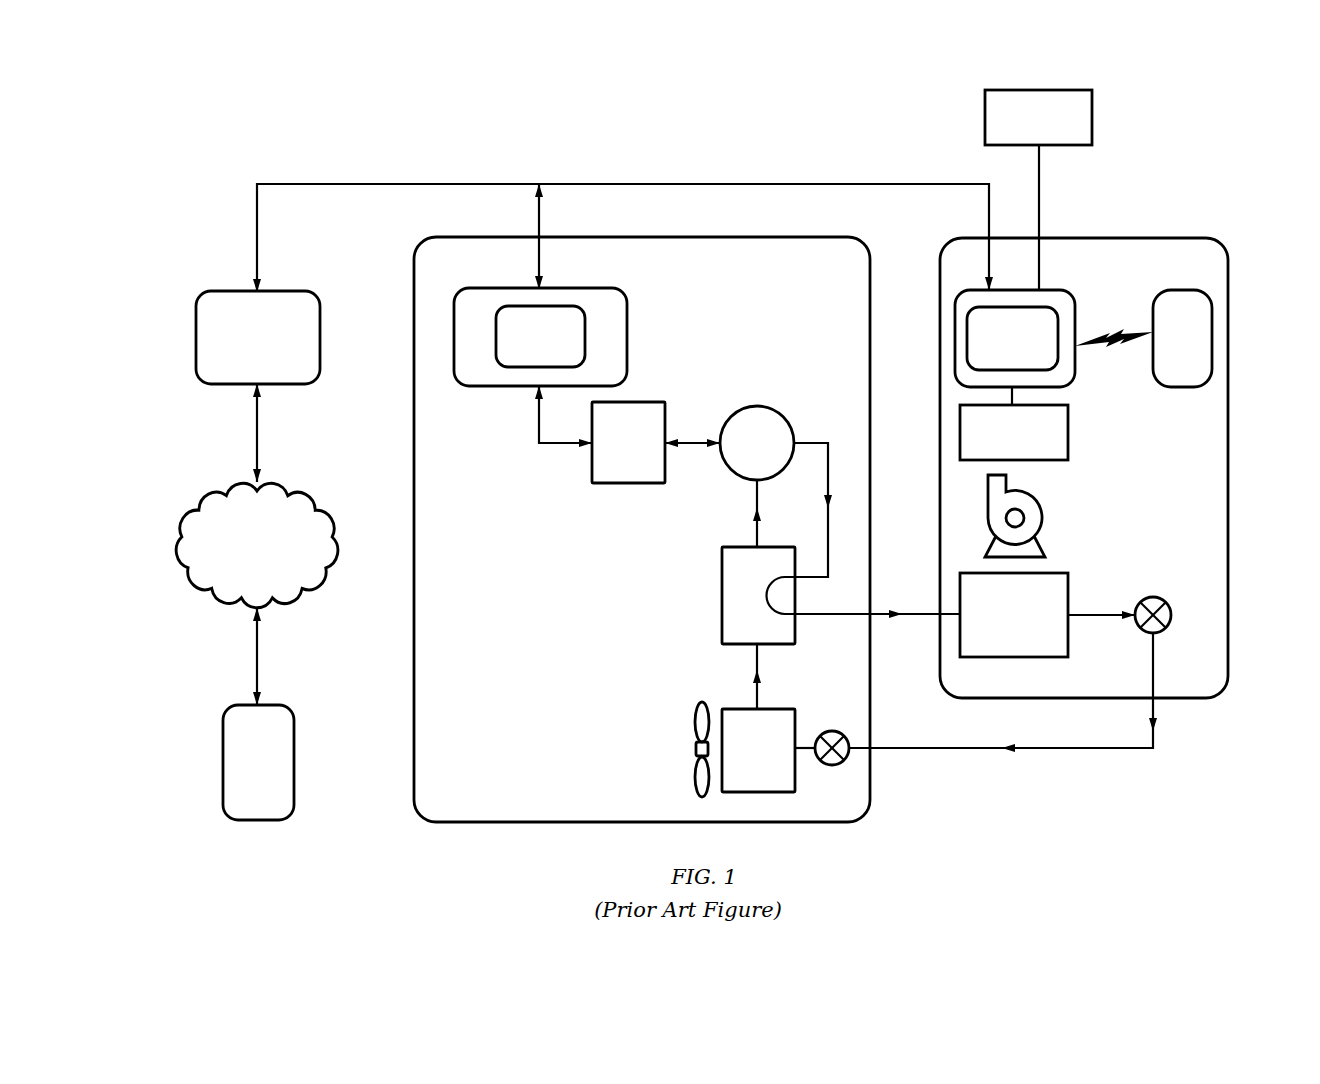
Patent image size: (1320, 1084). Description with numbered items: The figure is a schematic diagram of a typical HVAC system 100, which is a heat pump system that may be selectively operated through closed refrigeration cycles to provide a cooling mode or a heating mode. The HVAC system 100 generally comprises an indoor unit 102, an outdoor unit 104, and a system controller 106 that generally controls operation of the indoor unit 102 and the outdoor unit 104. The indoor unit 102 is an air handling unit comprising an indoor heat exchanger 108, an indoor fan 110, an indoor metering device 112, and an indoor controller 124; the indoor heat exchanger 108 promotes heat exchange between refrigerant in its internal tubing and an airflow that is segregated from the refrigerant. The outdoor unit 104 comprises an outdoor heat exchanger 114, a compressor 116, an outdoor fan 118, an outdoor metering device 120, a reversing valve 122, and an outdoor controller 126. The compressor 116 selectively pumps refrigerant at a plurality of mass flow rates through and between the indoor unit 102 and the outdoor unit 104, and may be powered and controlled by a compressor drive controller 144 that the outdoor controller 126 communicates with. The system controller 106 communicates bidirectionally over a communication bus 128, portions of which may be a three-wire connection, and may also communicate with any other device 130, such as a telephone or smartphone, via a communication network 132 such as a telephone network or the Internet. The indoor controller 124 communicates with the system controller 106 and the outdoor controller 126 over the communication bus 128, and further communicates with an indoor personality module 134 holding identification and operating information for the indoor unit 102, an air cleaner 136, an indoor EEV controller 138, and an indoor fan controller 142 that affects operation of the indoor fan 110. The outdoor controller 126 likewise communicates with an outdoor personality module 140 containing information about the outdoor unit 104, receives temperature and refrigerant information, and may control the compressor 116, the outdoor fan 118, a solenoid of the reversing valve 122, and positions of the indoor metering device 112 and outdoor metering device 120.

The HVAC system 100 is at (266, 80).
The indoor unit 102 is at (1158, 238).
The outdoor unit 104 is at (752, 237).
The system controller 106 is at (240, 350).
The indoor heat exchanger 108 is at (994, 625).
The indoor fan 110 is at (1040, 502).
The indoor metering device 112 is at (1153, 597).
The outdoor heat exchanger 114 is at (739, 760).
The compressor 116 is at (739, 454).
The outdoor fan 118 is at (695, 749).
The outdoor metering device 120 is at (832, 731).
The reversing valve 122 is at (722, 595).
The indoor controller 124 is at (1075, 297).
The outdoor controller 126 is at (628, 322).
The communication bus 128 is at (656, 184).
The other device 130 is at (240, 772).
The communication network 132 is at (240, 556).
The indoor personality module 134 is at (994, 349).
The air cleaner 136 is at (1020, 129).
The indoor EEV controller 138 is at (1164, 349).
The outdoor personality module 140 is at (522, 349).
The indoor fan controller 142 is at (994, 443).
The compressor drive controller 144 is at (610, 454).